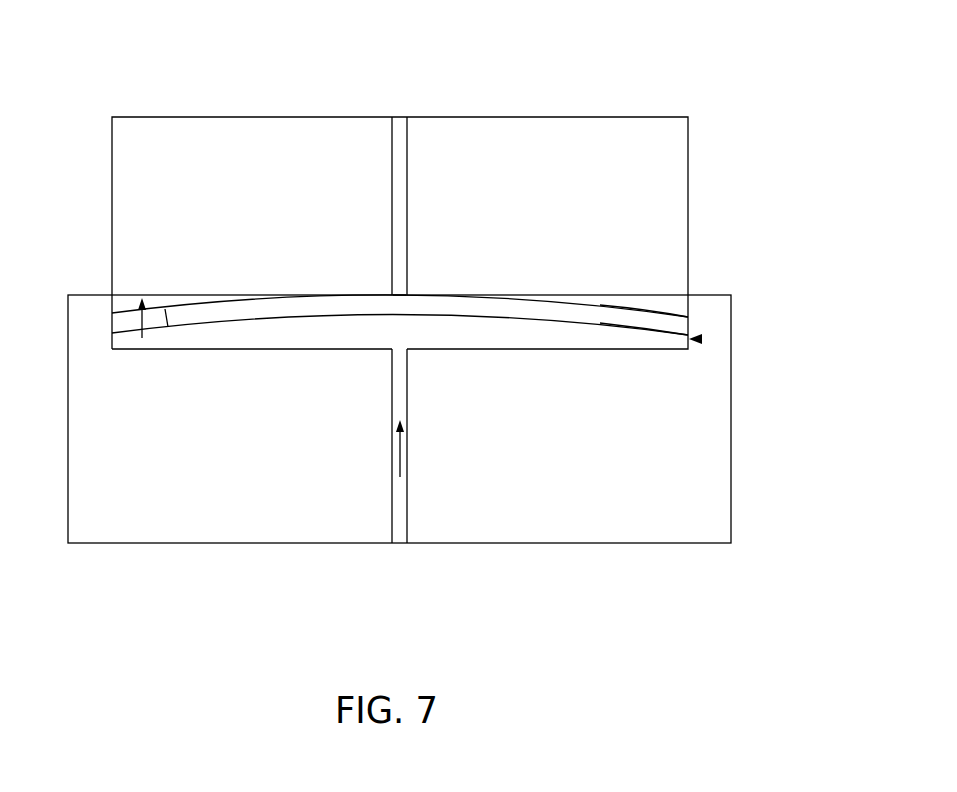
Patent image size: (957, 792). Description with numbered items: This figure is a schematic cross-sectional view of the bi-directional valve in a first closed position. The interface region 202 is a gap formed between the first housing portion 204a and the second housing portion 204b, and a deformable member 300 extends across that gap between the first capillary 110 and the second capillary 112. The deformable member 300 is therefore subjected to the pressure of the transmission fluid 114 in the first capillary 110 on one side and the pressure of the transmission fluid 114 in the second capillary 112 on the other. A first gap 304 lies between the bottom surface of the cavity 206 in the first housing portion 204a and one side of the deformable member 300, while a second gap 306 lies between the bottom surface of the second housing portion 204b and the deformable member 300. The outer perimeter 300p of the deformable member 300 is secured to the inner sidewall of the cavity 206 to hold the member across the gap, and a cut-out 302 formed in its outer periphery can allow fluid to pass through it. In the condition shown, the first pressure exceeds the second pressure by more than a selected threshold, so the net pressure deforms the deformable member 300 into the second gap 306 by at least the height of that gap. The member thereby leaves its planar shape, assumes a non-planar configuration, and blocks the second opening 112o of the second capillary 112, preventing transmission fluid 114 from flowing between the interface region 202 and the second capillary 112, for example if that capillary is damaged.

The interface region 202 is at (205, 77).
The second housing portion 204b is at (247, 180).
The first housing portion 204a is at (257, 458).
The second capillary 112 is at (409, 162).
The second opening 112o is at (397, 293).
The first capillary 110 is at (408, 483).
The transmission fluid 114 is at (400, 504).
The deformable member 300 is at (415, 325).
The cut-out 302 is at (125, 325).
The first gap 304 is at (557, 337).
The second gap 306 is at (583, 302).
The outer perimeter 300p is at (688, 322).
The cavity 206 is at (700, 339).